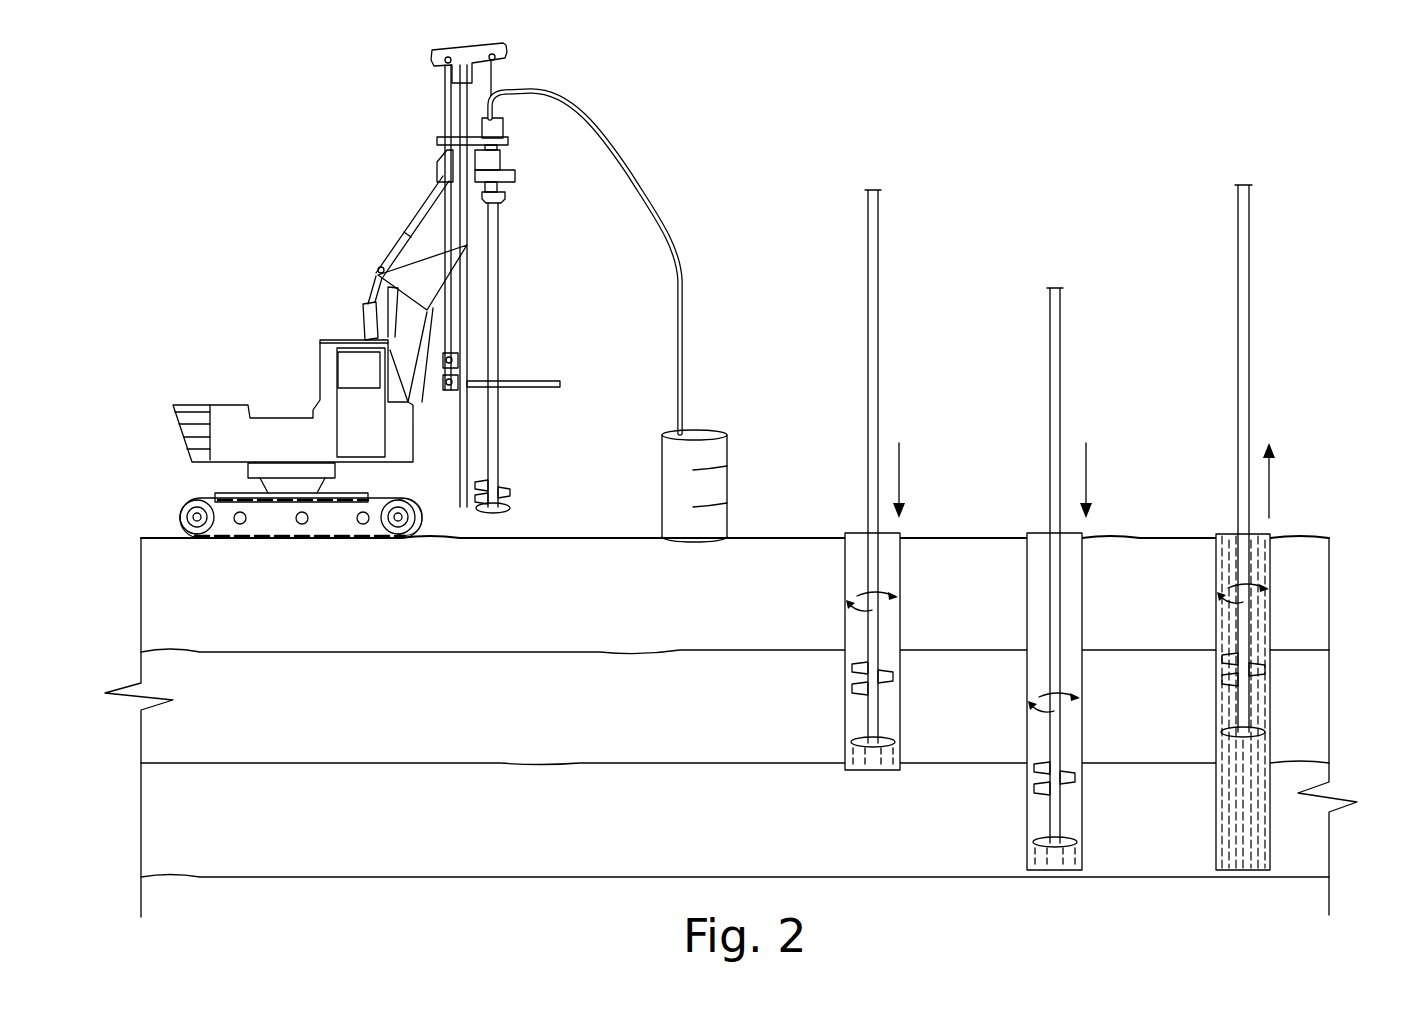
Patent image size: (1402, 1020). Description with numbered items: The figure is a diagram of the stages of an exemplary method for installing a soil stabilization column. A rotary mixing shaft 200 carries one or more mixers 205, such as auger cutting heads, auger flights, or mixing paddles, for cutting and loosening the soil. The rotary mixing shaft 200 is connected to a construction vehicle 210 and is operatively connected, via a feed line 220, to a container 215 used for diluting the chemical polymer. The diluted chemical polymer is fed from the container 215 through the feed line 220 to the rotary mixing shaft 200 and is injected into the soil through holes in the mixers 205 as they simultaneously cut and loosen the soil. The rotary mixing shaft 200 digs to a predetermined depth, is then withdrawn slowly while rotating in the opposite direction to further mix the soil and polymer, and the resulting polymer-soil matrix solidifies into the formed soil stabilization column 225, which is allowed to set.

The rotary mixing shaft 200 is at (497, 285).
The mixers 205 is at (522, 490).
The construction vehicle 210 is at (237, 405).
The container 215 is at (730, 457).
The feed line 220 is at (637, 177).
The soil stabilization column 225 is at (1275, 536).